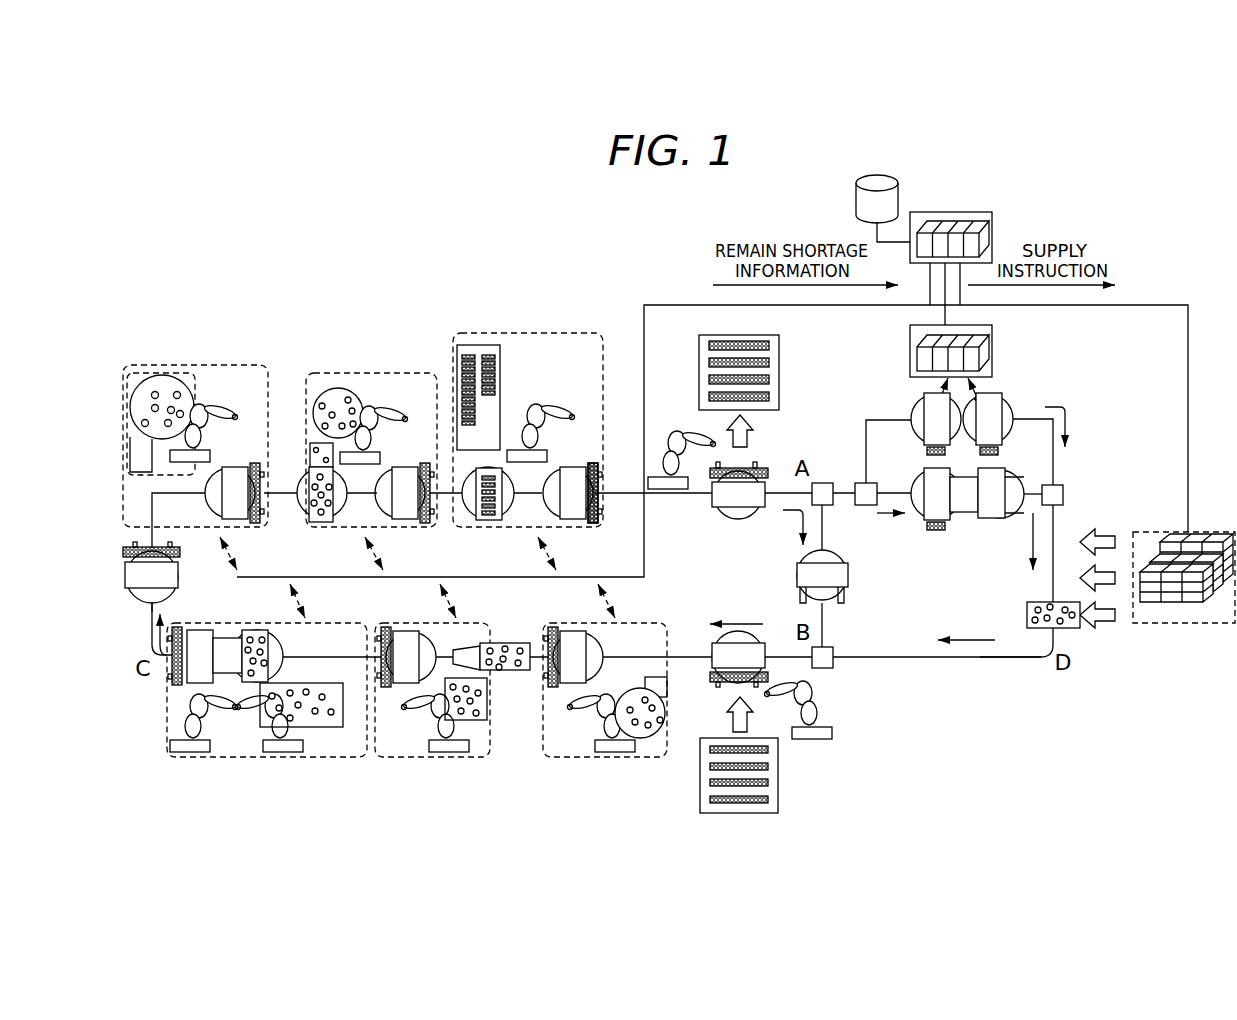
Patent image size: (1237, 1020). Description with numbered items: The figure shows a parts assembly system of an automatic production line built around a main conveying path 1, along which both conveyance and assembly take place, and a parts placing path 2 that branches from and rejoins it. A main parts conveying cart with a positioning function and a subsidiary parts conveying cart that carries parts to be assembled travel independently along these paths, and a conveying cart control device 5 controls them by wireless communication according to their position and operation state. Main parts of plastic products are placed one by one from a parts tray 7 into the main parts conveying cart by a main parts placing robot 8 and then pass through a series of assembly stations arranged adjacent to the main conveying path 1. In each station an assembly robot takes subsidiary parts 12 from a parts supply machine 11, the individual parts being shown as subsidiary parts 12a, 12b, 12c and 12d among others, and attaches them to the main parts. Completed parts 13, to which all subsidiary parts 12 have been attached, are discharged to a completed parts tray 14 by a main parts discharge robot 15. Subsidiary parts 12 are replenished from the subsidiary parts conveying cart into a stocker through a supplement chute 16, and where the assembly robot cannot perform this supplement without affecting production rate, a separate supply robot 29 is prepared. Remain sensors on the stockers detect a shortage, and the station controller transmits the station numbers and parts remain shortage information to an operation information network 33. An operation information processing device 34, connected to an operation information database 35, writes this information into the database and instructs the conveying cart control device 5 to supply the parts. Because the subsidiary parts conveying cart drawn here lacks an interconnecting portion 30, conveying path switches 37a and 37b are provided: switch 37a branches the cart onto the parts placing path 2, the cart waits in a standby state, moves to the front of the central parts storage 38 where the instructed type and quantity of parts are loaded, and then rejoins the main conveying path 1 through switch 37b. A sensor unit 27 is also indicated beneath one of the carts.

The main conveying path 1 is at (150, 620).
The parts placing path 2 is at (1000, 660).
The conveying cart control device 5 is at (993, 343).
The parts tray 7 is at (764, 775).
The main parts placing robot 8 is at (833, 734).
The parts supply machine 11 is at (183, 373).
The subsidiary parts 12 is at (500, 672).
The subsidiary part 12a is at (648, 738).
The subsidiary part 12b is at (478, 720).
The subsidiary part 12c is at (316, 727).
The subsidiary part 12d is at (152, 395).
The completed parts 13 is at (775, 345).
The completed parts tray 14 is at (768, 371).
The main parts discharge robot 15 is at (668, 489).
The supplement chute 16 is at (312, 437).
The sensor unit 27 is at (999, 452).
The supply robot 29 is at (280, 753).
The interconnecting portion 30 is at (228, 638).
The operation information network 33 is at (660, 303).
The operation information processing device 34 is at (977, 212).
The operation information database 35 is at (900, 187).
The conveying path switch 37a is at (822, 483).
The conveying path switch 37b is at (828, 668).
The central parts storage 38 is at (1190, 624).